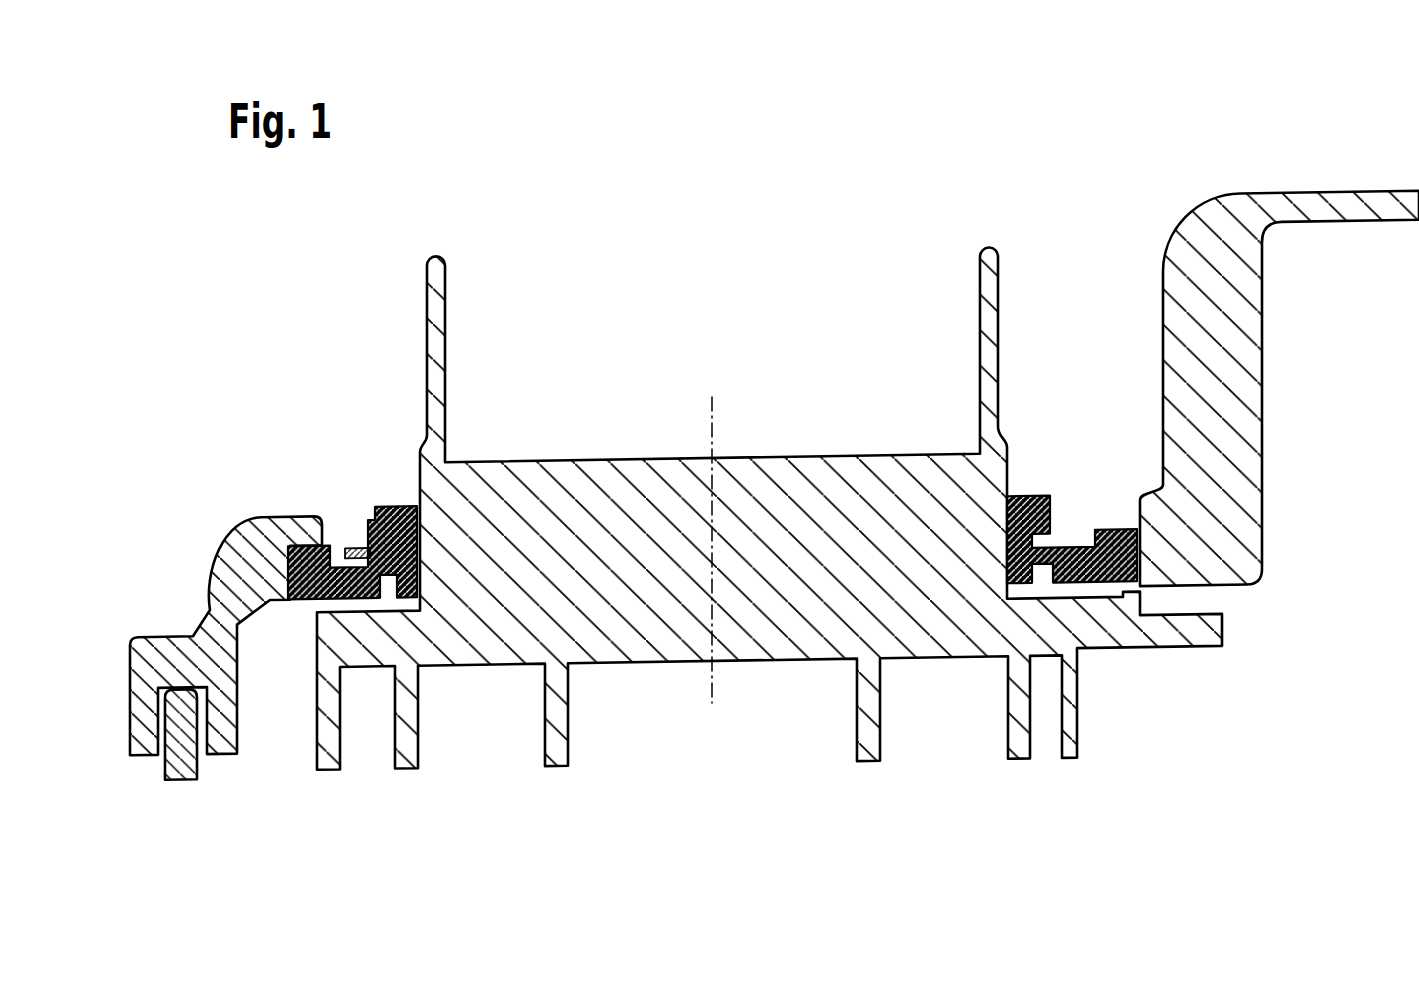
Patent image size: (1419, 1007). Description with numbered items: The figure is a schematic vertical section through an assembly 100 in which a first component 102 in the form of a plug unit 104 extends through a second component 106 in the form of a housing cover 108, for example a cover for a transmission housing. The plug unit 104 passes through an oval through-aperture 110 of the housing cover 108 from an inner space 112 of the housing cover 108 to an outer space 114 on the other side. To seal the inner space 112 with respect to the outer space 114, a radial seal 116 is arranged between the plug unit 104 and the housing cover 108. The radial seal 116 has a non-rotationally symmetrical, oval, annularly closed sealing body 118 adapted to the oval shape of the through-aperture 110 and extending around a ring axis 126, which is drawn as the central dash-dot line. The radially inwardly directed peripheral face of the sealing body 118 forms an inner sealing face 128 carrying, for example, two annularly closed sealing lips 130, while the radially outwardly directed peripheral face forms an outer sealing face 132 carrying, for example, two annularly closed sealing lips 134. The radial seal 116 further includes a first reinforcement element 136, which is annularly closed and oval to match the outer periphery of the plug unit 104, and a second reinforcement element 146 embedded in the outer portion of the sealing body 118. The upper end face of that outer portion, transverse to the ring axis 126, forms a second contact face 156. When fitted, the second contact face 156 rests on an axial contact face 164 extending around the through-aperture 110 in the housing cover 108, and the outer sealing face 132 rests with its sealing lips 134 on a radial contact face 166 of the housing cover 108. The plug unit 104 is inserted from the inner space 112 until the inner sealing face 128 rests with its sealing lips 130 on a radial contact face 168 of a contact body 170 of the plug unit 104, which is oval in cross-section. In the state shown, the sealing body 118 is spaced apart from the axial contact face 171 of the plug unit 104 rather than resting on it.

The assembly 100 is at (1152, 172).
The first component 102 is at (545, 482).
The plug unit 104 is at (655, 483).
The second component 106 is at (1242, 210).
The housing cover 108 is at (1375, 208).
The through-aperture 110 is at (1068, 506).
The inner space 112 is at (1215, 720).
The outer space 114 is at (1101, 270).
The radial seal 116 is at (368, 505).
The sealing body 118 is at (387, 506).
The ring axis 126 is at (712, 413).
The inner sealing face 128 is at (1000, 523).
The sealing lips 130 is at (424, 563).
The outer sealing face 132 is at (1140, 542).
The sealing lips 134 is at (263, 547).
The first reinforcement element 136 is at (353, 542).
The second reinforcement element 146 is at (313, 598).
The second contact face 156 is at (1108, 530).
The axial contact face 164 is at (1127, 595).
The radial contact face 166 is at (1138, 563).
The radial contact face 168 is at (1007, 434).
The contact body 170 is at (840, 492).
The axial contact face 171 is at (356, 609).